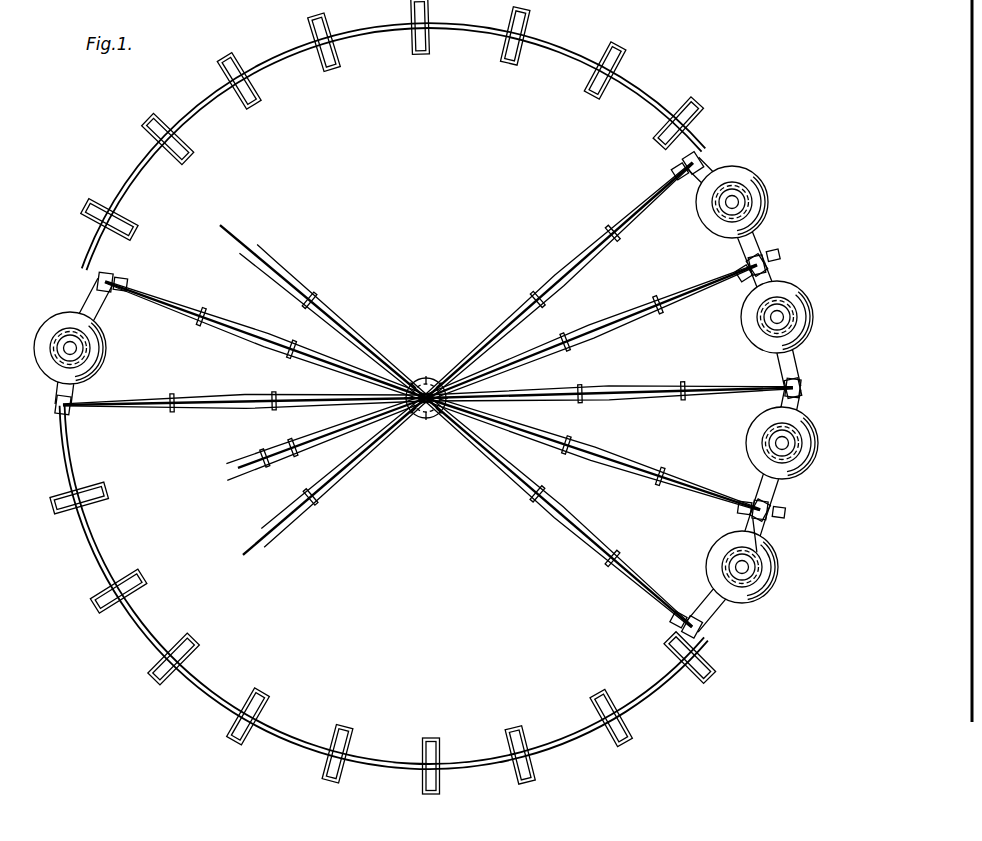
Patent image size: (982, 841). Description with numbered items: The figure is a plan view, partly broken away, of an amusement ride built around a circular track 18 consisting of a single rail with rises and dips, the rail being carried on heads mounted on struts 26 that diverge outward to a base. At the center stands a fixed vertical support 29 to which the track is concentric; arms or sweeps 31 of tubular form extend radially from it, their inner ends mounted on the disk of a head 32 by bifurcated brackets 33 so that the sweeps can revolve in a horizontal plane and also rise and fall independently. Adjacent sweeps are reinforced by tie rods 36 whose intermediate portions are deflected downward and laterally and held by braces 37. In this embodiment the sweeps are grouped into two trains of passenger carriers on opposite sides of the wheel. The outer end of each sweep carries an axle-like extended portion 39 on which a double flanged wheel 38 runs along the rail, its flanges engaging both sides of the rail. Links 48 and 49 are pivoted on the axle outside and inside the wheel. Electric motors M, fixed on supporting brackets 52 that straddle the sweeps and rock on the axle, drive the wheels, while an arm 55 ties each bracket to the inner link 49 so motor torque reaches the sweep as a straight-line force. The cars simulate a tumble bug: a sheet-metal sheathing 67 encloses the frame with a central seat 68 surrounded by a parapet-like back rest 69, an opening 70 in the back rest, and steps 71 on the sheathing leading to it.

The circular track 18 is at (458, 762).
The struts 26 is at (318, 50).
The fixed vertical support 29 is at (427, 392).
The arms or sweeps 31 is at (594, 258).
The head 32 is at (427, 410).
The bifurcated brackets 33 is at (415, 390).
The tie rods 36 is at (658, 470).
The braces 37 is at (668, 384).
The double flanged wheels 38 is at (774, 258).
The extended portion (axle) 39 is at (786, 262).
The links 48 is at (782, 526).
The links 49 is at (746, 538).
The supporting brackets 52 is at (108, 280).
The arm 55 is at (706, 212).
The enclosing sheathing 67 is at (744, 186).
The seat 68 is at (86, 346).
The back rest 69 is at (746, 198).
The opening 70 is at (758, 196).
The steps 71 is at (766, 216).
The electric motors M is at (680, 165).